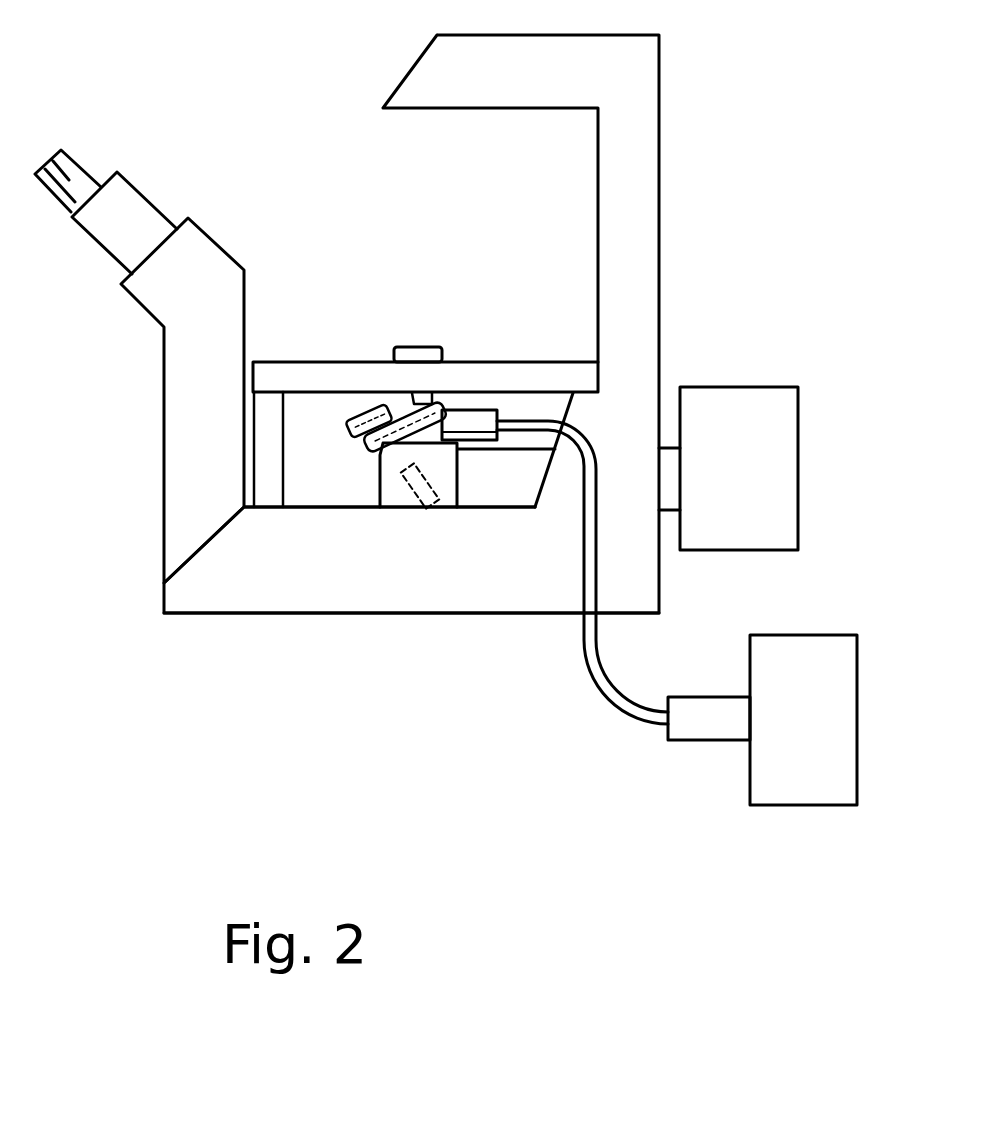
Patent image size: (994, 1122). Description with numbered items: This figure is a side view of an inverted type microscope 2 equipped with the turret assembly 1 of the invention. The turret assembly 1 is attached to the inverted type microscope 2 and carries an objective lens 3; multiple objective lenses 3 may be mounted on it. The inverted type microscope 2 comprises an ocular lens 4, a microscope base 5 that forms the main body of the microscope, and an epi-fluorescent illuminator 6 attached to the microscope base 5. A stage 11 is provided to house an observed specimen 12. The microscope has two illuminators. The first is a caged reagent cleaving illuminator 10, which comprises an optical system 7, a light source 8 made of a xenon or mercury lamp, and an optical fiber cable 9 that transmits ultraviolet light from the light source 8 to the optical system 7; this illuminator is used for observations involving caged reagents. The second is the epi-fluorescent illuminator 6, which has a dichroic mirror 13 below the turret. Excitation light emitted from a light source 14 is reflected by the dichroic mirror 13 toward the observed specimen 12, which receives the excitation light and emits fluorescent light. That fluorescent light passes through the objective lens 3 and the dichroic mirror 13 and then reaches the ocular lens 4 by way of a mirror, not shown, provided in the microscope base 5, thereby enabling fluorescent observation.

The turret assembly 1 is at (362, 447).
The inverted type microscope 2 is at (718, 139).
The objective lens 3 is at (418, 398).
The ocular lens 4 is at (88, 168).
The microscope base 5 is at (272, 598).
The epi-fluorescent illuminator 6 is at (733, 357).
The optical system 7 is at (484, 418).
The light source 8 is at (750, 655).
The optical fiber cable 9 is at (598, 641).
The caged reagent cleaving illuminator 10 is at (503, 402).
The stage 11 is at (277, 372).
The observed specimen 12 is at (405, 346).
The dichroic mirror 13 is at (418, 500).
The light source 14 is at (746, 535).